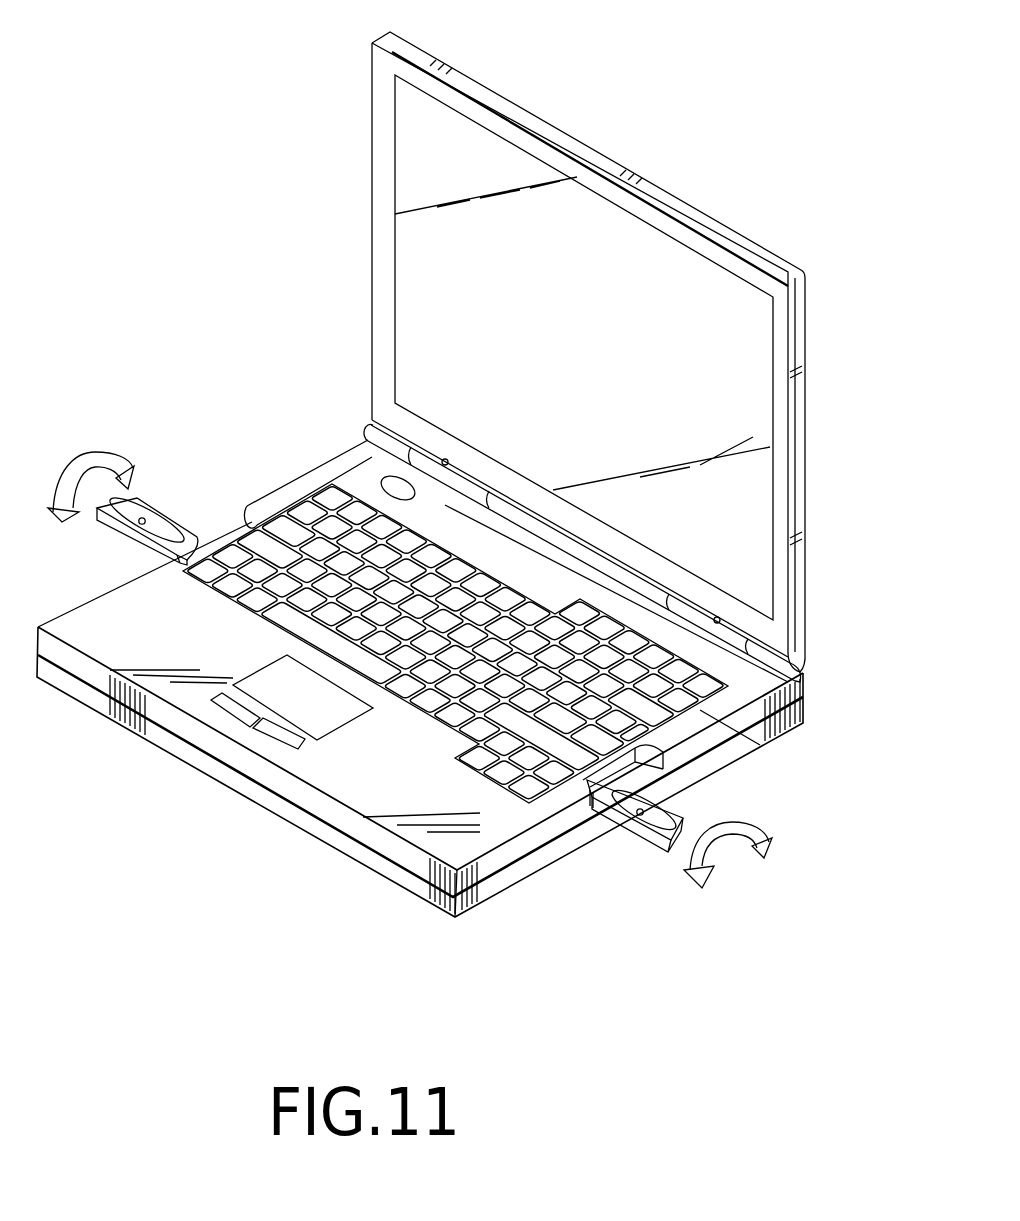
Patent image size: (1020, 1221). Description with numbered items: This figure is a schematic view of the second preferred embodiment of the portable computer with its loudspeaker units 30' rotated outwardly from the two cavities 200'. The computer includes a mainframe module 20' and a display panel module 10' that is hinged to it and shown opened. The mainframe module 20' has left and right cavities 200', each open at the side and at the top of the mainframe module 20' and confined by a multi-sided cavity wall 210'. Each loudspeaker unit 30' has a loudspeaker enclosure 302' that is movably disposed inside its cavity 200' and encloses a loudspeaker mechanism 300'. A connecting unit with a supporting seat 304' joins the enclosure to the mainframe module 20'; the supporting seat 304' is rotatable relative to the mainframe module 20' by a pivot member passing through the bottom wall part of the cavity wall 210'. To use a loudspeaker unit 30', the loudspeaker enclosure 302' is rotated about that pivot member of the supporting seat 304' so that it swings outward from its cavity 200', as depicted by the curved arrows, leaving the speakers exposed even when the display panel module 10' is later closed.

The display panel module 10' is at (501, 352).
The mainframe module 20' is at (465, 670).
The loudspeaker unit 30' is at (380, 695).
The cavity 200' is at (776, 770).
The cavity wall 210' is at (729, 769).
The loudspeaker mechanism 300' is at (633, 869).
The loudspeaker enclosure 302' is at (691, 871).
The supporting seat 304' is at (563, 883).